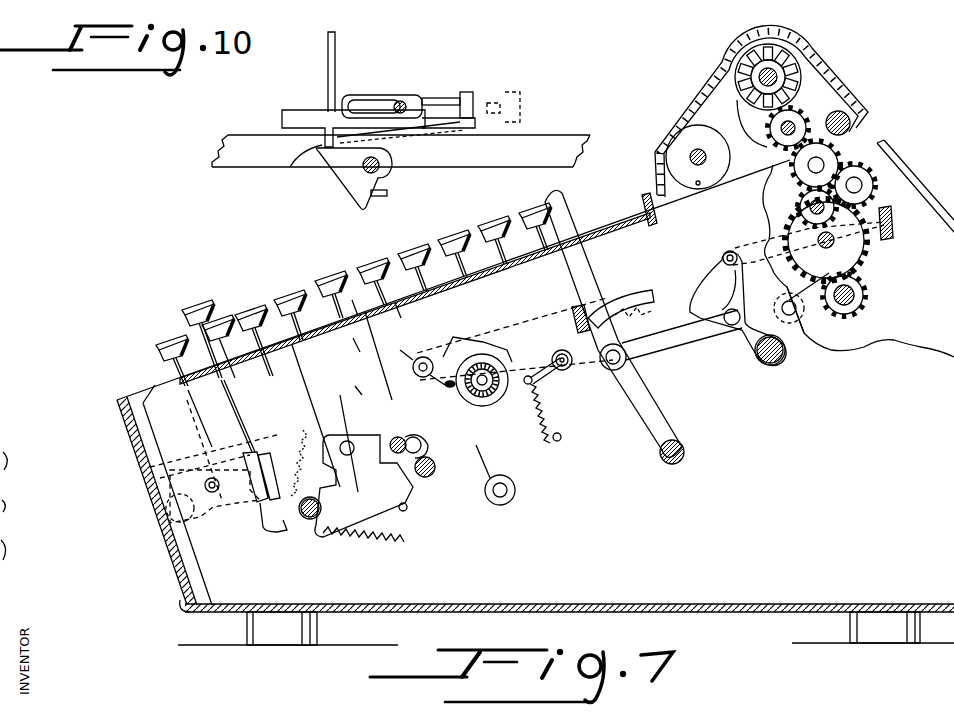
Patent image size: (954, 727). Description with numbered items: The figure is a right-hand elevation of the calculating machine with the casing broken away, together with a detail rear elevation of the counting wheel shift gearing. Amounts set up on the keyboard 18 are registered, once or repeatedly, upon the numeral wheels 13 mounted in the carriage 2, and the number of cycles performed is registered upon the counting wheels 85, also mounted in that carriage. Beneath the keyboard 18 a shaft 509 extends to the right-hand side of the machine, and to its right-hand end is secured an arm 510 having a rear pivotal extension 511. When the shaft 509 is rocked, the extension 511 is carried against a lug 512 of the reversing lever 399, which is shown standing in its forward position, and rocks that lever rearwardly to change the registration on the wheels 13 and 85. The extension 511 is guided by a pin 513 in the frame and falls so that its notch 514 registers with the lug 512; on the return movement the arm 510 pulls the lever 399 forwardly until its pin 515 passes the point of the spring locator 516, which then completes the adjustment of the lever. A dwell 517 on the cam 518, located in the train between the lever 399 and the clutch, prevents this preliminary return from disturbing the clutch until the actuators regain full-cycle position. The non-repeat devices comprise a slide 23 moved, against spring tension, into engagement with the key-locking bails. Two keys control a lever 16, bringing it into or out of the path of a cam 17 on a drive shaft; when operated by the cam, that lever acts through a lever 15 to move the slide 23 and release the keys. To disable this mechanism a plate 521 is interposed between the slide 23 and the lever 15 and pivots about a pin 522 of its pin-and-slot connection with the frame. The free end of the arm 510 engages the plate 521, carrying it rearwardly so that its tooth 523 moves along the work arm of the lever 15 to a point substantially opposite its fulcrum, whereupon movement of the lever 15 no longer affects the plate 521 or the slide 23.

In FIG. 7, the carriage 2 is at (823, 65).
In FIG. 7, the numeral wheels 13 is at (678, 147).
In FIG. 10, the lever 15 is at (343, 175).
In FIG. 7, the lever 15 is at (355, 310).
In FIG. 10, the lever 16 is at (388, 194).
In FIG. 7, the lever 16 is at (355, 386).
In FIG. 7, the cam 17 is at (433, 346).
In FIG. 7, the keyboard 18 is at (250, 317).
In FIG. 10, the slide 23 is at (334, 70).
In FIG. 7, the slide 23 is at (353, 338).
In FIG. 7, the counting wheels 85 is at (743, 60).
In FIG. 7, the reversing lever 399 is at (647, 425).
In FIG. 7, the shaft 509 is at (505, 497).
In FIG. 10, the arm 510 is at (443, 100).
In FIG. 7, the arm 510 is at (475, 450).
In FIG. 7, the rear pivotal extension 511 is at (516, 330).
In FIG. 7, the lug 512 is at (618, 293).
In FIG. 7, the pin 513 is at (485, 342).
In FIG. 7, the notch 514 is at (575, 307).
In FIG. 7, the pin 515 is at (653, 345).
In FIG. 7, the spring locator 516 is at (583, 363).
In FIG. 7, the dwell 517 is at (710, 305).
In FIG. 7, the cam 518 is at (712, 272).
In FIG. 10, the plate 521 is at (298, 117).
In FIG. 7, the plate 521 is at (397, 303).
In FIG. 10, the pin 522 is at (401, 104).
In FIG. 10, the tooth 523 is at (292, 171).